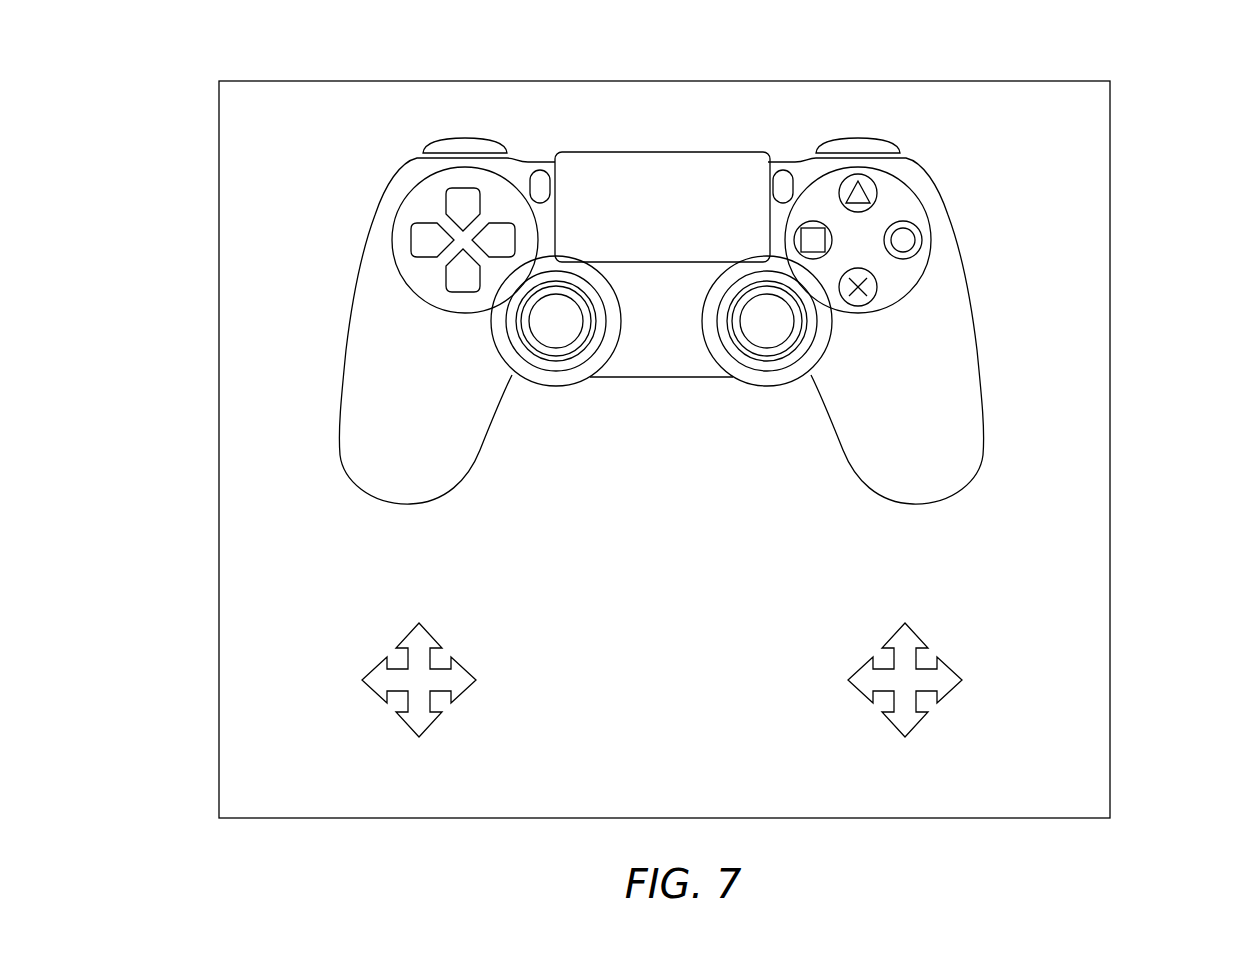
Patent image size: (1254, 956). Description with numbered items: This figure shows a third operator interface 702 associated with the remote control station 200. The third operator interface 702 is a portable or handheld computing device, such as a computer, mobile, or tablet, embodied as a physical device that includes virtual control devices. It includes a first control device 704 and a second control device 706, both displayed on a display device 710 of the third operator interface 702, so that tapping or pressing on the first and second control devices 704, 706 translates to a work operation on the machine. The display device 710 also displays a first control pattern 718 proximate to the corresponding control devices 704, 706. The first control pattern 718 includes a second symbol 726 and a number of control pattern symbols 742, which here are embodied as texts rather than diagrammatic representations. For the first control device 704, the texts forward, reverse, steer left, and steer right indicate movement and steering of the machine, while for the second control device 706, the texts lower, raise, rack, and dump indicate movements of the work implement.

The remote control station 200 is at (1076, 109).
The third operator interface 702 is at (769, 301).
The first control device 704 is at (556, 321).
The second control device 706 is at (766, 321).
The display device 710 is at (672, 562).
The first control pattern 718 is at (364, 642).
The second symbol 726 is at (387, 680).
The control pattern symbols 742 is at (576, 656).